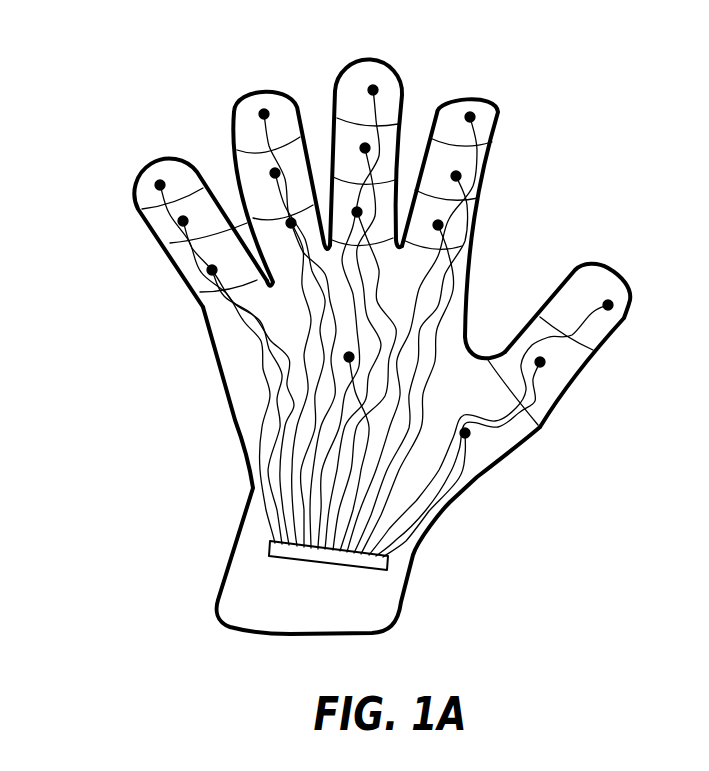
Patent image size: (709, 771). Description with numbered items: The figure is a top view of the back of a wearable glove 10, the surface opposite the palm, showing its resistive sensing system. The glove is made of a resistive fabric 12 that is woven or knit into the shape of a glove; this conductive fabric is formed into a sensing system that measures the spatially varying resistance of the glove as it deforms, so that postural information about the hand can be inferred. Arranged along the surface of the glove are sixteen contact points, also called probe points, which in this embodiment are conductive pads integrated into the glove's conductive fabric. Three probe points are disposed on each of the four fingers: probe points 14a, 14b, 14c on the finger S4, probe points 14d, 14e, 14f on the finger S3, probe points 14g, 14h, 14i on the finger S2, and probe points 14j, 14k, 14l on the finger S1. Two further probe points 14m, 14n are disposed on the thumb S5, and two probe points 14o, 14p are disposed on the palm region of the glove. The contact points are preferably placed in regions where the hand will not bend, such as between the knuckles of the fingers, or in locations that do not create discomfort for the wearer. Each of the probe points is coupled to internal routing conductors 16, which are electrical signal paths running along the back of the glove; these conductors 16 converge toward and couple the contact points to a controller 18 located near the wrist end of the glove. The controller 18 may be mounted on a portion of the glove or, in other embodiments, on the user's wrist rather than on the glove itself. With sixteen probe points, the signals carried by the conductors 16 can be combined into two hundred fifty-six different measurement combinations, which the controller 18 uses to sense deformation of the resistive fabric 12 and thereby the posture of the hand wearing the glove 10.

The wearable glove 10 is at (450, 38).
The resistive fabric 12 is at (237, 445).
The probe point 14a is at (160, 185).
The probe point 14b is at (183, 221).
The probe point 14c is at (212, 270).
The probe point 14d is at (264, 114).
The probe point 14e is at (275, 173).
The probe point 14f is at (291, 223).
The probe point 14g is at (373, 90).
The probe point 14h is at (365, 148).
The probe point 14i is at (357, 212).
The probe point 14j is at (470, 117).
The probe point 14k is at (456, 176).
The probe point 14l is at (438, 225).
The probe point 14m is at (608, 305).
The probe point 14n is at (540, 362).
The probe point 14o is at (465, 433).
The probe point 14p is at (349, 357).
The internal routing conductors 16 is at (468, 338).
The controller 18 is at (270, 548).
The finger S1 is at (453, 211).
The finger S2 is at (366, 139).
The finger S3 is at (281, 174).
The finger S4 is at (200, 218).
The thumb S5 is at (560, 332).